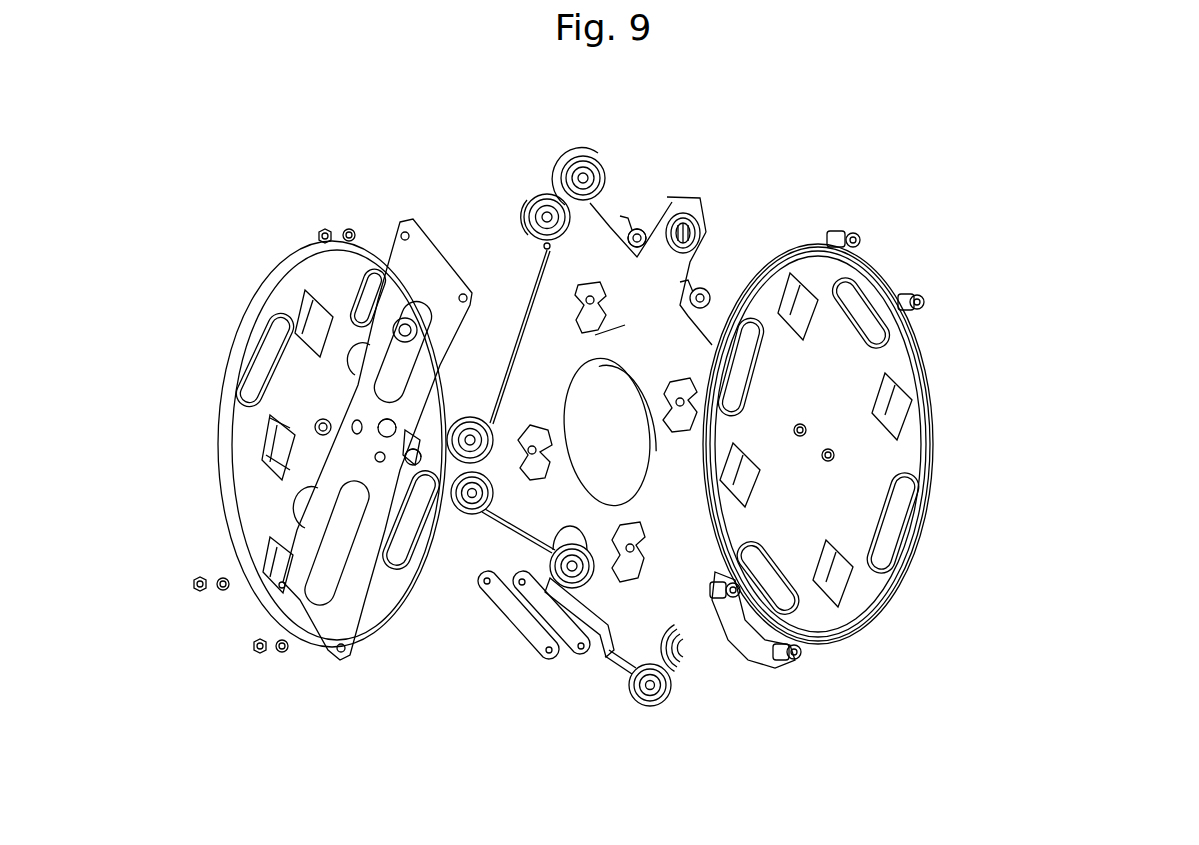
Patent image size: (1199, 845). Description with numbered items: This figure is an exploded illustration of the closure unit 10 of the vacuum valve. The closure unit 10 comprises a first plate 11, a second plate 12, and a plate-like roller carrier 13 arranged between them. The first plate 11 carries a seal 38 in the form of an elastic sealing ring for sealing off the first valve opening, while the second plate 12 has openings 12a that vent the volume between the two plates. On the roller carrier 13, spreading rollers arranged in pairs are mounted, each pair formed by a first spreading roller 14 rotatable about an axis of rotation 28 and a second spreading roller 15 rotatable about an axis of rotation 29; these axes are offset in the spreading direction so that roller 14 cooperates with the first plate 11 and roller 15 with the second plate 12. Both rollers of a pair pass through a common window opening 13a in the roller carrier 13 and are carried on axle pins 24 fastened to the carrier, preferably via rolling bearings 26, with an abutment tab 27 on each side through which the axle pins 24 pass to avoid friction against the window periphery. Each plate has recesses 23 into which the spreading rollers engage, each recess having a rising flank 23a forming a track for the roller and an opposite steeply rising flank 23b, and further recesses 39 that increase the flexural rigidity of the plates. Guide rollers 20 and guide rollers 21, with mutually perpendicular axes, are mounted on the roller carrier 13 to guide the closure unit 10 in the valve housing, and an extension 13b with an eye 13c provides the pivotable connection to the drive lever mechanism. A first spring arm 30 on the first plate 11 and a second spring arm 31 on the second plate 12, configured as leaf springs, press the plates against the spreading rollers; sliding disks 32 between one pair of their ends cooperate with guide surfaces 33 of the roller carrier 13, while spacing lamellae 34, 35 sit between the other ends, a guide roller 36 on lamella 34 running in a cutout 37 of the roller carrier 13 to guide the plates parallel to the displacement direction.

The closure unit 10 is at (908, 203).
The first plate 11 is at (860, 587).
The second plate 12 is at (262, 503).
The openings 12a is at (360, 357).
The roller carrier 13 is at (548, 380).
The window openings 13a is at (524, 207).
The extension 13b is at (670, 207).
The eye 13c is at (700, 208).
The first spreading roller 14 is at (562, 200).
The second spreading roller 15 is at (553, 385).
The guide rollers 20 is at (577, 156).
The guide rollers 21 is at (533, 195).
The recess 23 is at (305, 317).
The rising flank 23a is at (270, 458).
The flank 23b is at (272, 436).
The axle pins 24 is at (530, 475).
The rolling bearings 26 is at (540, 560).
The abutment tab 27 is at (700, 385).
The axis of rotation 28 is at (598, 183).
The axis of rotation 29 is at (603, 340).
The first spring arm 30 is at (758, 640).
The second spring arm 31 is at (347, 613).
The sliding disks 32 is at (672, 200).
The guide surfaces 33 is at (633, 230).
The spacing lamella 34 is at (565, 640).
The spacing lamella 35 is at (553, 588).
The guide roller 36 is at (560, 625).
The cutout 37 is at (520, 625).
The seal 38 is at (934, 433).
The further recesses 39 is at (367, 297).